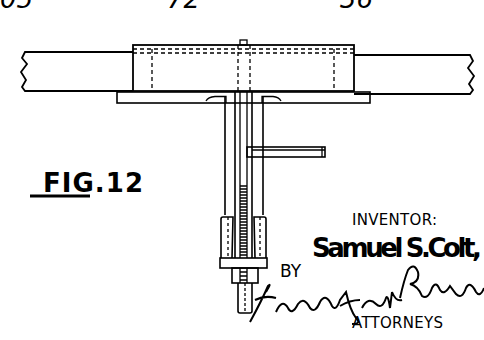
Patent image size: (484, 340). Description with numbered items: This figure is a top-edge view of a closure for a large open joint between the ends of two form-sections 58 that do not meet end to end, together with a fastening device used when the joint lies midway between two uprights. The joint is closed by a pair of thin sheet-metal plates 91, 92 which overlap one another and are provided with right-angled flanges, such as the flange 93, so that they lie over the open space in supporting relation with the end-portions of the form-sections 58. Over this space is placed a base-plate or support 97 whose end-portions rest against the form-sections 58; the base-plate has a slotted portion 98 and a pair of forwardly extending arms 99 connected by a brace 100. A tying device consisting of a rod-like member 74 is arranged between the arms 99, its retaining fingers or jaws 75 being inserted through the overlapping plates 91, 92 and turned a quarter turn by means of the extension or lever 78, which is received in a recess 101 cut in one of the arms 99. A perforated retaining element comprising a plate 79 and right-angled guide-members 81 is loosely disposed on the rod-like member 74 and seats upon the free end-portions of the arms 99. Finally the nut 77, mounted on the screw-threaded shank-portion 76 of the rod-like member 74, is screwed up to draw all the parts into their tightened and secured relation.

The form-section 58 is at (75, 62).
The sheet-metal plate 91 is at (158, 45).
The sheet-metal plate 92 is at (197, 62).
The right-angled flange 93 is at (310, 65).
The retaining fingers or jaws 75 is at (248, 44).
The rod-like member 74 is at (251, 68).
The base-plate or support 97 is at (142, 98).
The slotted portion 98 is at (213, 100).
The forwardly extending arms 99 is at (225, 153).
The brace 100 is at (226, 190).
The recess or cut-away 101 is at (265, 150).
The extension or lever 78 is at (316, 147).
The right-angled guide-members 81 is at (222, 228).
The screw-threaded shank-portion 76 is at (234, 251).
The plate of retaining element 79 is at (220, 263).
The tightening nut 77 is at (236, 283).